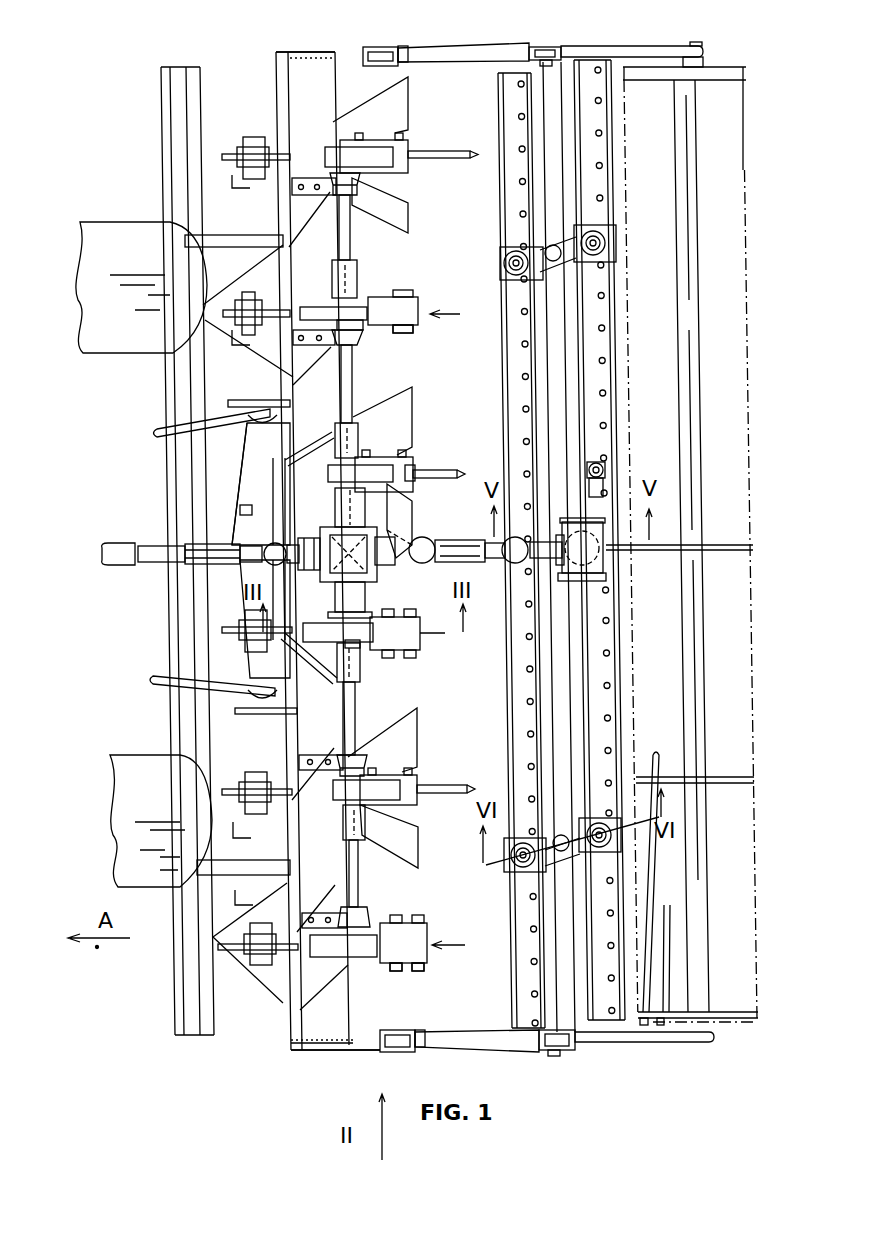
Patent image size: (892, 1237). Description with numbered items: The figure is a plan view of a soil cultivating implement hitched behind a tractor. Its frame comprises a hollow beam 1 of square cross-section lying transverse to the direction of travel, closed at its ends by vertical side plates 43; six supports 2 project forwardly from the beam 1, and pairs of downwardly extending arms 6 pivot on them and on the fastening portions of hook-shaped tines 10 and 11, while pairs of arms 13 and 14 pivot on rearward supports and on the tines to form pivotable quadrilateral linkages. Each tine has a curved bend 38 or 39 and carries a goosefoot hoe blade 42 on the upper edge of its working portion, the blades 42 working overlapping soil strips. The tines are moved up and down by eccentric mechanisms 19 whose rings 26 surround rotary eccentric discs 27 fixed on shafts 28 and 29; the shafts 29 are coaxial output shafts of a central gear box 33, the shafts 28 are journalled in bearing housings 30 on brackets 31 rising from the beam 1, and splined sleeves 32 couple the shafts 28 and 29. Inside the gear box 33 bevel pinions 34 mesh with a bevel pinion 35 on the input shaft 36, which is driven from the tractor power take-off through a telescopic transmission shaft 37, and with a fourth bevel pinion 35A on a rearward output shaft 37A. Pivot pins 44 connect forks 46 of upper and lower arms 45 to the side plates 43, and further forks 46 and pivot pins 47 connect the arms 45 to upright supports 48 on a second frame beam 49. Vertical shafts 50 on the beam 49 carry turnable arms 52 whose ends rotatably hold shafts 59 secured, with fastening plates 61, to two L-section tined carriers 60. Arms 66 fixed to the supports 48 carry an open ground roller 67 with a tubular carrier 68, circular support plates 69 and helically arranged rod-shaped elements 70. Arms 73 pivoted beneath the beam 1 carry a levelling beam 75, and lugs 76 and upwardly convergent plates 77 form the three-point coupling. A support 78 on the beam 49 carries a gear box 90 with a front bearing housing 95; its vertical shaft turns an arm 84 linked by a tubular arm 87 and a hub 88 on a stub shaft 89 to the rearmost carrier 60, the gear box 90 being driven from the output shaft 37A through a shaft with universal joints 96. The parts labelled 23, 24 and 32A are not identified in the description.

The frame beam 1 is at (281, 78).
The supports 2 is at (268, 145).
The arms 6 is at (236, 182).
The tine 10 is at (461, 314).
The tine 11 is at (482, 152).
The arms 13 is at (430, 333).
The arms 14 is at (412, 182).
The eccentric mechanism 19 is at (318, 298).
The lower cross bar 23 is at (248, 861).
The gearbox input coupling 24 is at (375, 572).
The ring 26 is at (318, 152).
The rotary eccentric disc 27 is at (400, 568).
The shaft 28 is at (352, 222).
The output shaft 29 is at (438, 478).
The bearing housing 30 is at (362, 188).
The bracket 31 is at (309, 242).
The internally splined sleeve 32 is at (358, 275).
The lever arm 32A is at (323, 440).
The central gear box 33 is at (366, 592).
The bevel pinion 34 is at (368, 520).
The bevel pinion 35 is at (281, 503).
The bevel pinion 35A is at (412, 512).
The rotary input shaft 36 is at (272, 533).
The telescopic transmission shaft 37 is at (130, 543).
The rotary output shaft 37A is at (412, 535).
The curved bend 38 is at (430, 303).
The curved bend 39 is at (437, 152).
The blade 42 is at (398, 102).
The side plate 43 is at (320, 52).
The pivot pin 44 is at (378, 47).
The arm 45 is at (489, 44).
The fork 46 is at (402, 46).
The pivot pin 47 is at (550, 48).
The upright support 48 is at (556, 62).
The frame beam 49 is at (455, 672).
The vertical shaft 50 is at (549, 236).
The arm 52 is at (580, 272).
The shaft 59 is at (504, 263).
The carrier 60 is at (500, 365).
The fastening plate 61 is at (604, 258).
The arm 66 is at (648, 45).
The ground roller 67 is at (755, 310).
The tubular carrier 68 is at (704, 690).
The support plate 69 is at (735, 545).
The elongate element 70 is at (655, 920).
The arm 73 is at (231, 238).
The levelling beam 75 is at (166, 122).
The lugs 76 is at (230, 400).
The plate 77 is at (245, 511).
The support 78 is at (606, 572).
The arm 84 is at (612, 600).
The tubular arm 87 is at (605, 486).
The hub 88 is at (604, 462).
The stub shaft 89 is at (606, 470).
The gear box 90 is at (556, 566).
The bearing housing 95 is at (552, 540).
The universal joint 96 is at (512, 564).